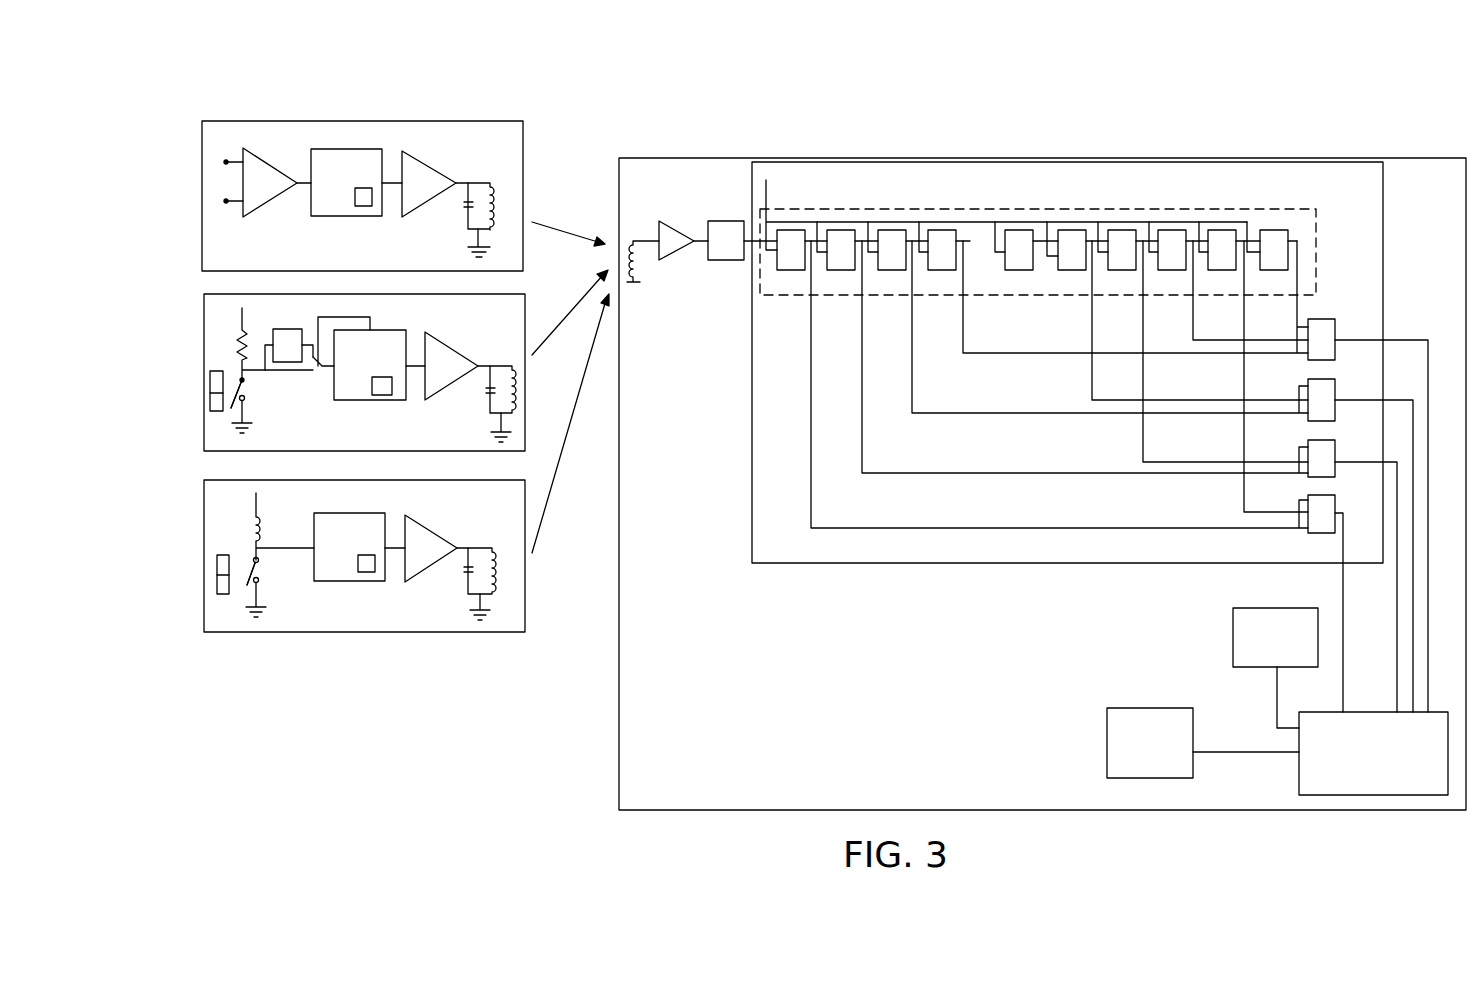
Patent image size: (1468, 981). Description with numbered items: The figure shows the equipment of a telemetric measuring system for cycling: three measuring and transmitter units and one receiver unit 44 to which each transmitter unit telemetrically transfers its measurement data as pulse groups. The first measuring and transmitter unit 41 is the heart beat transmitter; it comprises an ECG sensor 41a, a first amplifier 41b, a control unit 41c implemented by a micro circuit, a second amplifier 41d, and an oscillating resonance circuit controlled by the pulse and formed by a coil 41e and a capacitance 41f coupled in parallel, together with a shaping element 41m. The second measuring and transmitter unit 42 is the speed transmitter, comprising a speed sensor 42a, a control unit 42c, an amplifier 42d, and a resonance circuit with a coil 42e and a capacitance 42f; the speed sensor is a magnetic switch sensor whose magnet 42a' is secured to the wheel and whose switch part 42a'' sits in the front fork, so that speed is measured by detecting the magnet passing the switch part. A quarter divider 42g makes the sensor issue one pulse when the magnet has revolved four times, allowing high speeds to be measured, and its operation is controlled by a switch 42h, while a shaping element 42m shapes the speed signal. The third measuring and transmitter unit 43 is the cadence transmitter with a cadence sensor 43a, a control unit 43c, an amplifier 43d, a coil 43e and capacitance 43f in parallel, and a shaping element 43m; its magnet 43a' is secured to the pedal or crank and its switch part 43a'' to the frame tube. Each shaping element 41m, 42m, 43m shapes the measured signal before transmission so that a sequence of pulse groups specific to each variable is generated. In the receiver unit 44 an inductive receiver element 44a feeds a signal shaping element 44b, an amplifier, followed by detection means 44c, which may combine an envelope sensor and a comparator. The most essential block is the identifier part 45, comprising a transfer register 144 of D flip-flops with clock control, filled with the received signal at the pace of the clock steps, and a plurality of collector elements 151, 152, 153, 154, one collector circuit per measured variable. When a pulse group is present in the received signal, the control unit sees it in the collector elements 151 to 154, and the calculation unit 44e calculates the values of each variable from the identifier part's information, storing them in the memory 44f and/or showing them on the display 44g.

The first measuring and transmitter unit 41 is at (473, 132).
The sensor 41a is at (218, 148).
The first amplifier 41b is at (265, 170).
The control unit 41c is at (330, 160).
The second amplifier 41d is at (419, 168).
The coil 41e is at (493, 193).
The capacitance 41f is at (467, 204).
The shaping element 41m is at (360, 206).
The second measuring and transmitter unit 42 is at (446, 322).
The speed sensor 42a is at (235, 364).
The magnet 42a' is at (186, 387).
The switch part 42a'' is at (196, 410).
The control unit 42c is at (352, 396).
The amplifier 42d is at (432, 397).
The coil 42e is at (513, 412).
The capacitance 42f is at (489, 391).
The divider 42g is at (276, 340).
The switch 42h is at (318, 377).
The shaping element 42m is at (385, 377).
The third measuring and transmitter unit 43 is at (432, 505).
The cadence sensor 43a is at (233, 548).
The magnet 43a' is at (189, 568).
The switch part 43a'' is at (215, 624).
The control unit 43c is at (333, 575).
The amplifier 43d is at (406, 571).
The coil 43e is at (496, 573).
The capacitance 43f is at (462, 578).
The shaping element 43m is at (360, 556).
The receiver unit 44 is at (839, 150).
The inductive receiver element 44a is at (640, 267).
The signal shaping element 44b is at (672, 232).
The detection means 44c is at (725, 256).
The calculation unit 44e is at (1312, 775).
The memory 44f is at (1120, 748).
The display 44g is at (1245, 637).
The identifier part 45 is at (992, 545).
The transfer register 144 is at (978, 210).
The collector element 151 is at (1320, 332).
The collector element 152 is at (1325, 388).
The collector element 153 is at (1325, 450).
The collector element 154 is at (1325, 505).